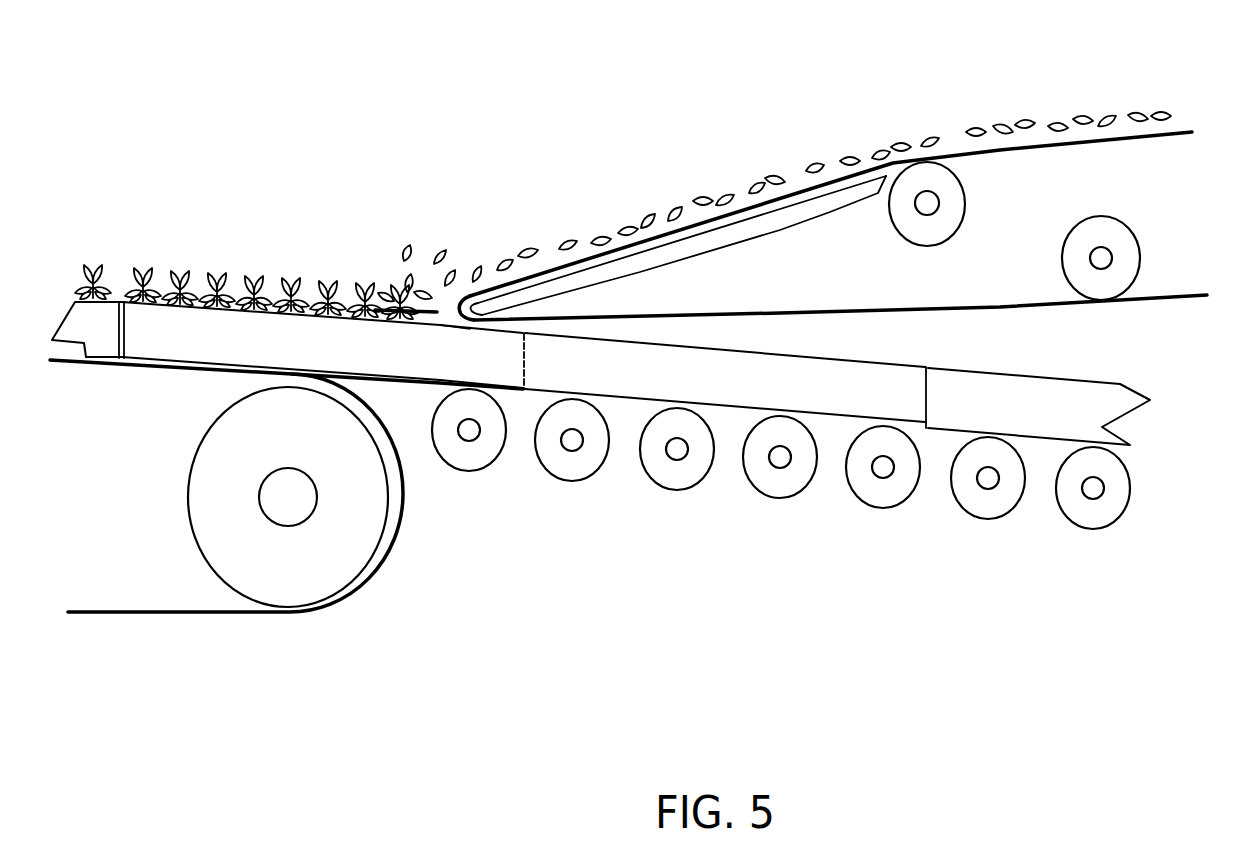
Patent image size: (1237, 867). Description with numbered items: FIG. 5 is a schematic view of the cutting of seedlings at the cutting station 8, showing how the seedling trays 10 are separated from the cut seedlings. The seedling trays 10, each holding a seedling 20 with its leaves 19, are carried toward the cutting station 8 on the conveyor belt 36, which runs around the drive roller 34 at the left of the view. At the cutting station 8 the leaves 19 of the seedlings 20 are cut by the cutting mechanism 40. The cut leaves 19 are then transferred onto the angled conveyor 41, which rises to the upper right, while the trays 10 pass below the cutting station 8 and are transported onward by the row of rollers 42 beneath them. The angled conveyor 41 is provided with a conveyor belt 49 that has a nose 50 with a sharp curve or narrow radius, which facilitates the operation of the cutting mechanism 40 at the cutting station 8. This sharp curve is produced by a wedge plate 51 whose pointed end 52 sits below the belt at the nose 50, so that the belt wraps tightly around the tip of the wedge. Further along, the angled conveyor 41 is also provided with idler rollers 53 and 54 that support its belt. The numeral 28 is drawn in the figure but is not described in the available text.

The cutting station 8 is at (560, 202).
The seedling tray 10 is at (118, 300).
The leaves 19 is at (403, 240).
The seedling 20 is at (213, 277).
The tray partition 28 is at (137, 370).
The drive roller 34 is at (309, 607).
The conveyor belt 36 is at (147, 613).
The cutting mechanism 40 is at (395, 306).
The angled conveyor 41 is at (1190, 118).
The rollers 42 is at (883, 495).
The conveyor belt 49 is at (733, 312).
The nose 50 is at (457, 322).
The wedge plate 51 is at (833, 196).
The pointed end 52 is at (492, 302).
The idler roller 53 is at (955, 207).
The idler roller 54 is at (1107, 238).